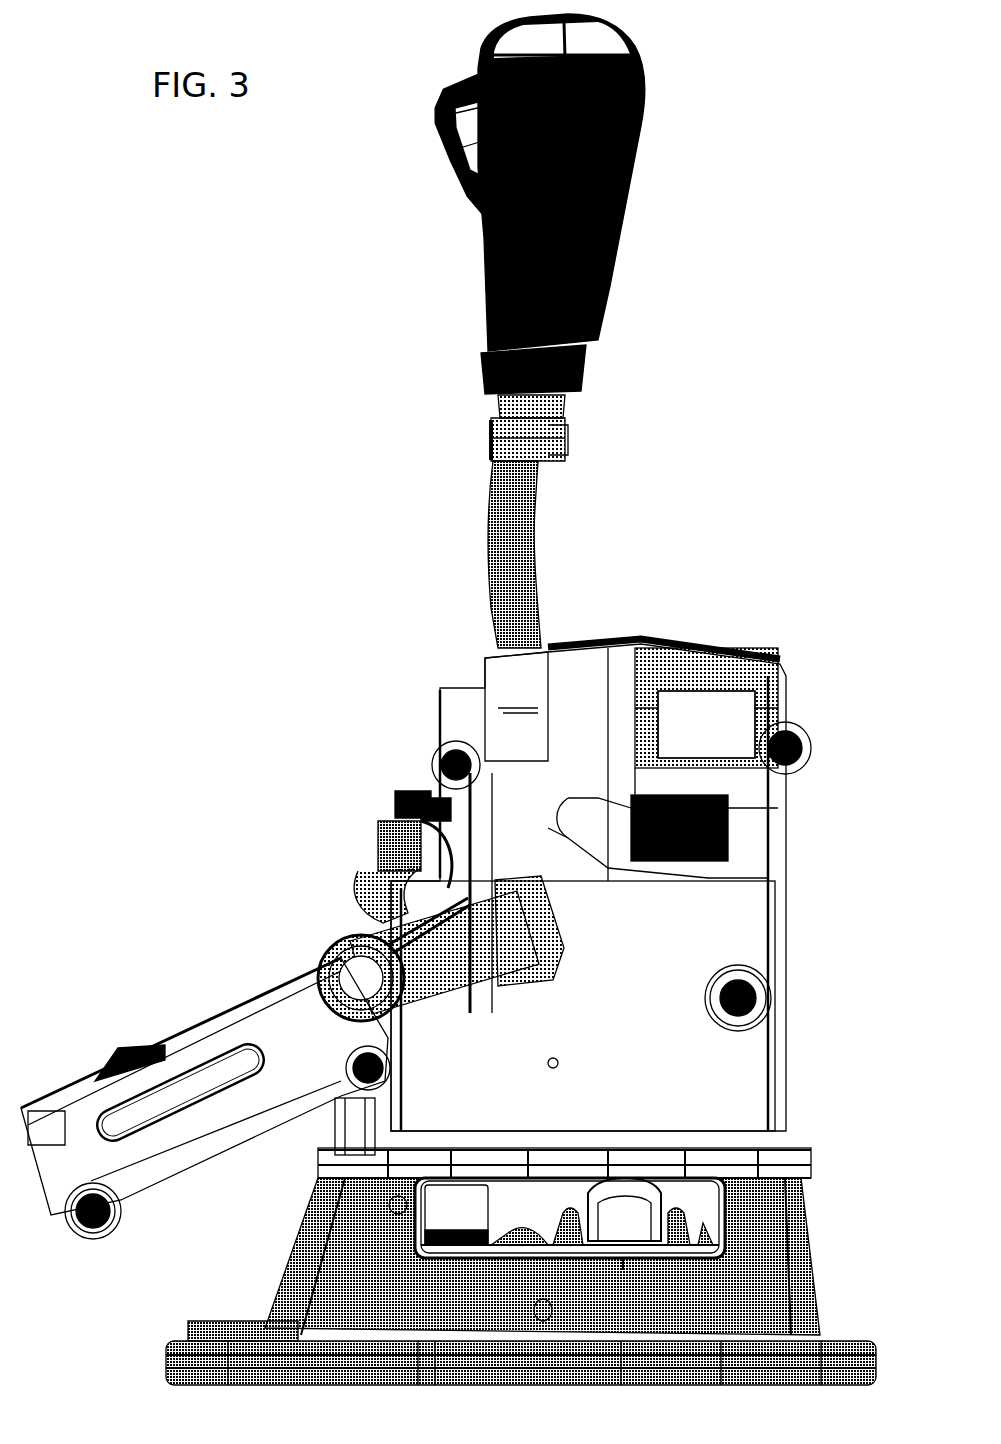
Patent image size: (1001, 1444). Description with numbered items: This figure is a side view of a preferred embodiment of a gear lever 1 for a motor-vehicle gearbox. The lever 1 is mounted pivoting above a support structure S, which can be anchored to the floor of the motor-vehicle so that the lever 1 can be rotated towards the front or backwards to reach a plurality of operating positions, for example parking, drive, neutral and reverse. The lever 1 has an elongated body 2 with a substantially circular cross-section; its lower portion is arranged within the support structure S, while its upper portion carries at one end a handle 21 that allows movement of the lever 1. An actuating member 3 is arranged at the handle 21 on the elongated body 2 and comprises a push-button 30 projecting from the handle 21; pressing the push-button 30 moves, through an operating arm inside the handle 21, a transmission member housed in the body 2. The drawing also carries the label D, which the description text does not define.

The gear lever 1 is at (565, 439).
The elongated body 2 is at (537, 550).
The actuating member 3 is at (509, 204).
The handle 21 is at (633, 46).
The push-button 30 is at (408, 133).
The detent arm D is at (265, 729).
The support structure S is at (815, 692).